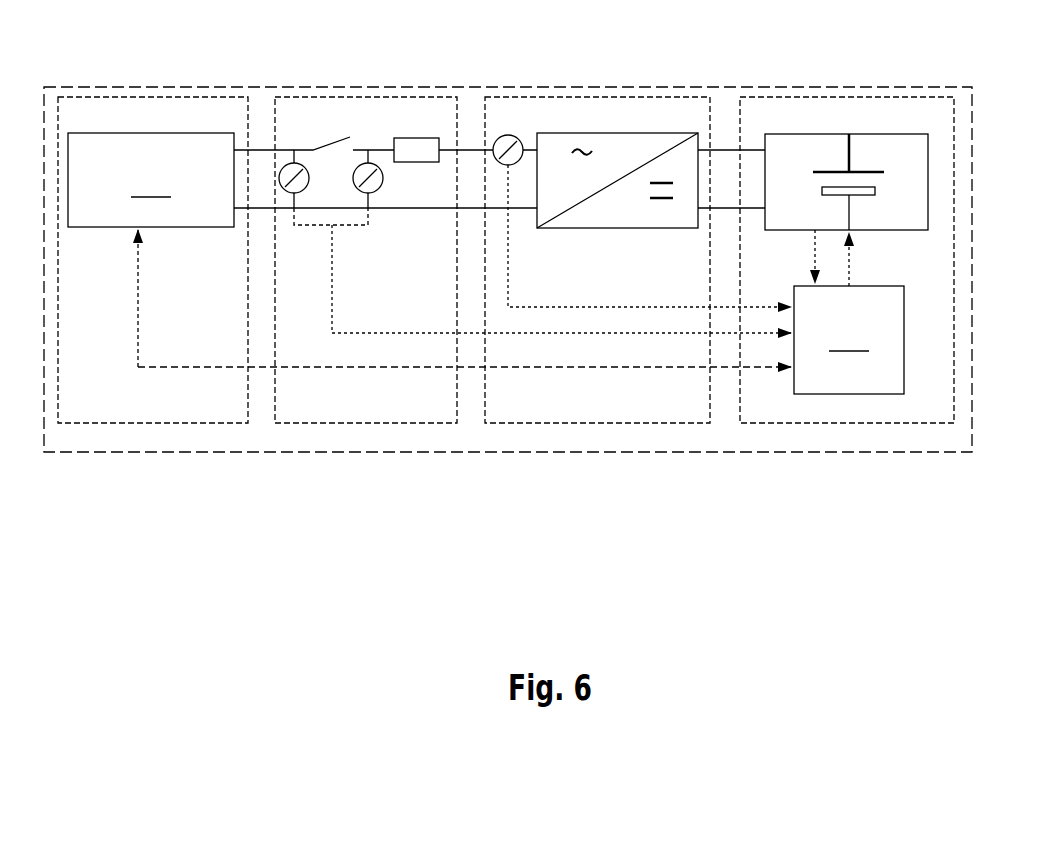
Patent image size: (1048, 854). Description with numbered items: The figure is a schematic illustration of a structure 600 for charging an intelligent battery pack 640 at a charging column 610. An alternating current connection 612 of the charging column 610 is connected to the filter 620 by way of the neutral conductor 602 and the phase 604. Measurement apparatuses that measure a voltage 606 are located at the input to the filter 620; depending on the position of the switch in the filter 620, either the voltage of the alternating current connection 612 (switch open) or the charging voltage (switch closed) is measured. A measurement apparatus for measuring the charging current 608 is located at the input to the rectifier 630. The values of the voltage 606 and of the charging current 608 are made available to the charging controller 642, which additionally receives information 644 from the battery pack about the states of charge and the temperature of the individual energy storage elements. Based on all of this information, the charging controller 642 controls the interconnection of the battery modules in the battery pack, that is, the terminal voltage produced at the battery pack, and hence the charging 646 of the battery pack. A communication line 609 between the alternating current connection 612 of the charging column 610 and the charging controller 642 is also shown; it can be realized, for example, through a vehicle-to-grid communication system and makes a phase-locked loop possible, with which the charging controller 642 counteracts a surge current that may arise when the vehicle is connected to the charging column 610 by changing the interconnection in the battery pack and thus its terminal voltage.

The structure 600 is at (955, 458).
The neutral conductor 602 is at (262, 215).
The phase 604 is at (262, 146).
The voltage 606 is at (763, 337).
The charging current 608 is at (766, 296).
The communication line 609 is at (526, 371).
The charging column 610 is at (105, 403).
The alternating current connection 612 is at (151, 250).
The filter 620 is at (368, 403).
The rectifier 630 is at (598, 403).
The intelligent battery pack 640 is at (810, 402).
The charging controller 642 is at (849, 340).
The information 644 is at (810, 258).
The charging 646 is at (856, 254).